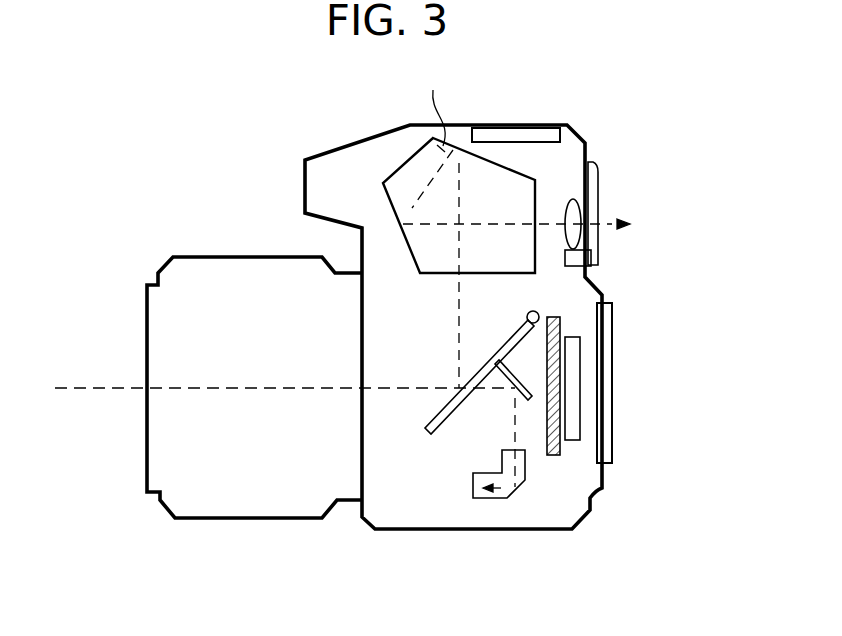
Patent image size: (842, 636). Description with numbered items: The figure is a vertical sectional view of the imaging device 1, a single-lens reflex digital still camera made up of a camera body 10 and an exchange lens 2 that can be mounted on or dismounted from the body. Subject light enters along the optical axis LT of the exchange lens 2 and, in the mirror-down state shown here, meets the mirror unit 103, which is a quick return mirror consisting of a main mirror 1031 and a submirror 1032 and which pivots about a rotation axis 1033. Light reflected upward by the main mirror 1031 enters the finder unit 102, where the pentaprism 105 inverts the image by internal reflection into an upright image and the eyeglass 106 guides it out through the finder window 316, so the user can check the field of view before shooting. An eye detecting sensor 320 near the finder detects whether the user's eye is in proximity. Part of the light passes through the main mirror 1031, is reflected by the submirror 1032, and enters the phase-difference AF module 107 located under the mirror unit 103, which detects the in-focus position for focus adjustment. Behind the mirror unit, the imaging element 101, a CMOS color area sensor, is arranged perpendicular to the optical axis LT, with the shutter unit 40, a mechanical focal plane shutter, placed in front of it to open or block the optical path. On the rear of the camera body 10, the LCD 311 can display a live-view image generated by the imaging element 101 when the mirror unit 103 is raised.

The imaging device 1 is at (141, 140).
The exchange lens 2 is at (243, 250).
The camera body 10 is at (472, 118).
The shutter unit 40 is at (551, 456).
The imaging element 101 is at (573, 441).
The finder unit 102 is at (392, 163).
The mirror unit 103 is at (485, 441).
The pentaprism 105 is at (435, 106).
The eyeglass 106 is at (573, 199).
The phase-difference AF module 107 is at (488, 499).
The LCD 311 is at (605, 395).
The finder window 316 is at (602, 210).
The eye detecting sensor 320 is at (580, 258).
The main mirror 1031 is at (440, 432).
The submirror 1032 is at (531, 402).
The rotation axis 1033 is at (527, 315).
The optical axis LT is at (248, 393).